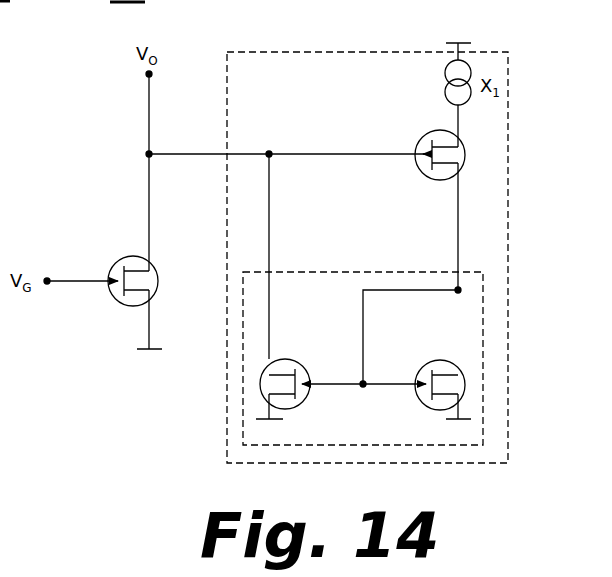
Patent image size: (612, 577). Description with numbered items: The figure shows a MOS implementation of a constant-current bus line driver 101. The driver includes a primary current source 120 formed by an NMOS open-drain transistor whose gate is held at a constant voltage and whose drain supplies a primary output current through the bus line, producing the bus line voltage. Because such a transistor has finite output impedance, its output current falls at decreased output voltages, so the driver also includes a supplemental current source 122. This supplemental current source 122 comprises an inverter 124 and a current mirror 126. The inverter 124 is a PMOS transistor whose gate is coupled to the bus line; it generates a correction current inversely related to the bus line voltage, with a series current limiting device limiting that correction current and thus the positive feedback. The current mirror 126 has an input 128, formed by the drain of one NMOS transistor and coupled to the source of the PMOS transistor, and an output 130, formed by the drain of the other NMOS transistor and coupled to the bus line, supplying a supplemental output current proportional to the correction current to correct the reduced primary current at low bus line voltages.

The driver 101 is at (141, 127).
The primary current source 120 is at (117, 259).
The supplemental current source 122 is at (275, 52).
The inverter 124 is at (430, 128).
The current mirror 126 is at (243, 378).
The input 128 is at (455, 282).
The output 130 is at (271, 319).